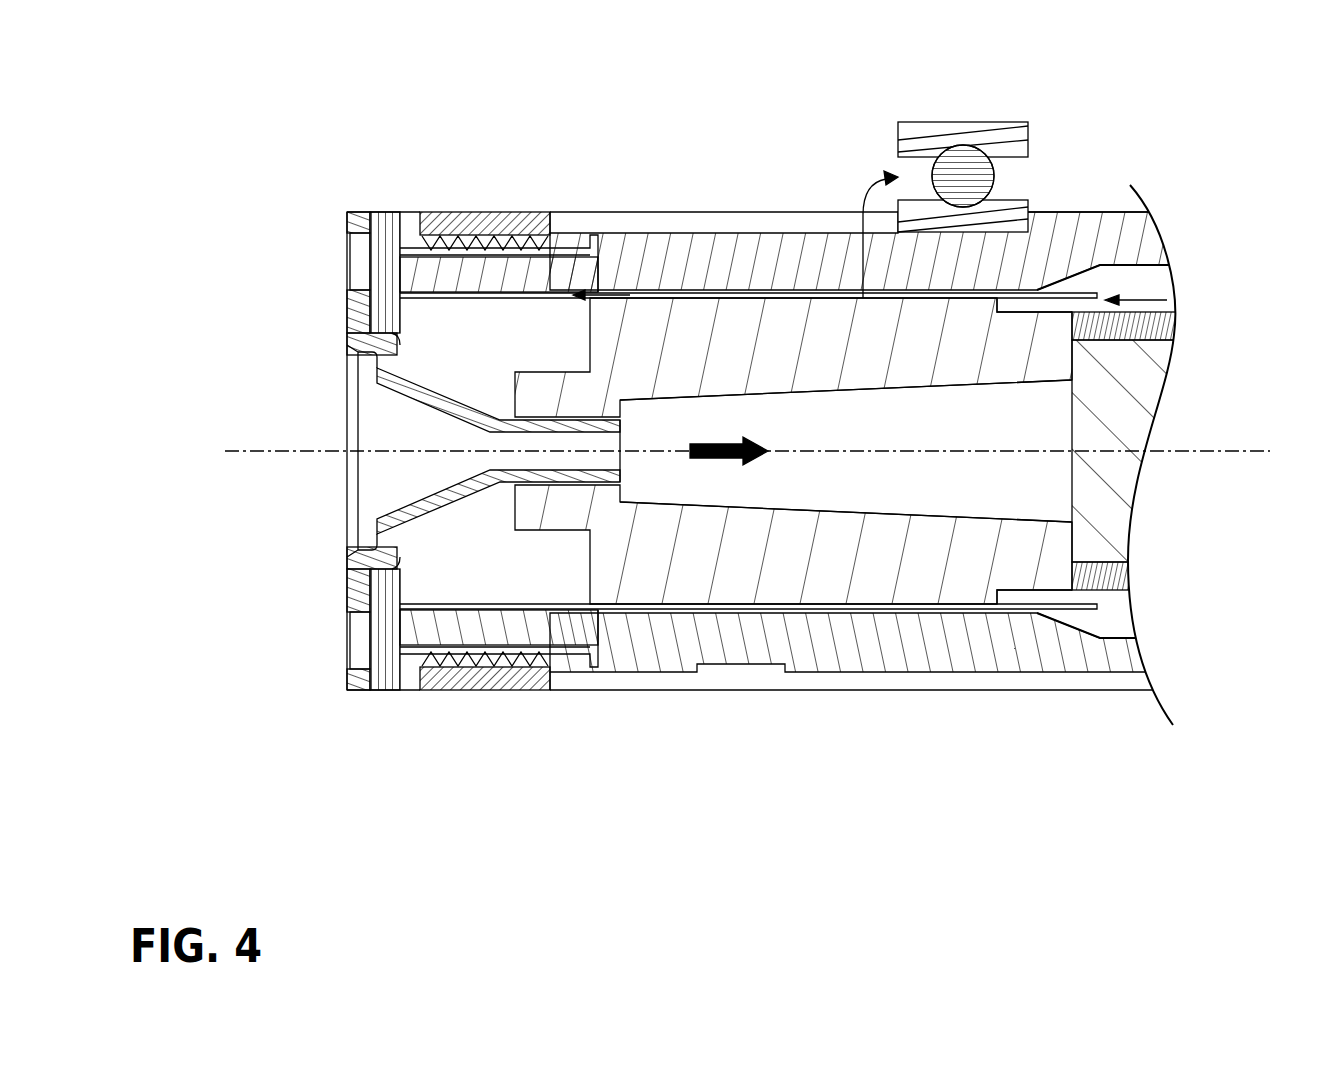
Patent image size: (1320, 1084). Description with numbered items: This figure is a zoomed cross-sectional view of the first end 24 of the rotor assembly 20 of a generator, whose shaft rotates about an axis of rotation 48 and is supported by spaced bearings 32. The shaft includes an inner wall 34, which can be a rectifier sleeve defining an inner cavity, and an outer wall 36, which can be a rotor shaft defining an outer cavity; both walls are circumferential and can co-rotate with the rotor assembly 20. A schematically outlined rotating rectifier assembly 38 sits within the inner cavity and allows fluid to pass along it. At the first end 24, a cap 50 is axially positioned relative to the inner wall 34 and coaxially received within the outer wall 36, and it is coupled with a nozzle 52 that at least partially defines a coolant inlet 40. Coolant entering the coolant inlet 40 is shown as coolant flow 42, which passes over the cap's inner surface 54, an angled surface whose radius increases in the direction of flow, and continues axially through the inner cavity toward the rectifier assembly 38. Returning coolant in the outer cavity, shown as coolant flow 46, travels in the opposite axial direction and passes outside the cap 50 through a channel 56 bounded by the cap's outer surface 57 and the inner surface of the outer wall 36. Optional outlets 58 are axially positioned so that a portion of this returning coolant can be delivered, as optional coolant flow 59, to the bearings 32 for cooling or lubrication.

The rotor assembly 20 is at (654, 69).
The first end 24 is at (450, 158).
The bearings 32 is at (983, 110).
The inner wall 34 is at (1128, 327).
The outer wall 36 is at (1098, 245).
The rotating rectifier assembly 38 is at (1127, 412).
The coolant inlet 40 is at (336, 500).
The coolant flow 42 is at (731, 462).
The coolant flow 46 is at (1133, 298).
The axis of rotation 48 is at (263, 447).
The cap 50 is at (716, 345).
The nozzle 52 is at (360, 583).
The inner surface 54 is at (963, 382).
The channel 56 is at (792, 293).
The outer surface 57 is at (645, 293).
The outlets 58 is at (862, 253).
The coolant flow 59 is at (868, 170).